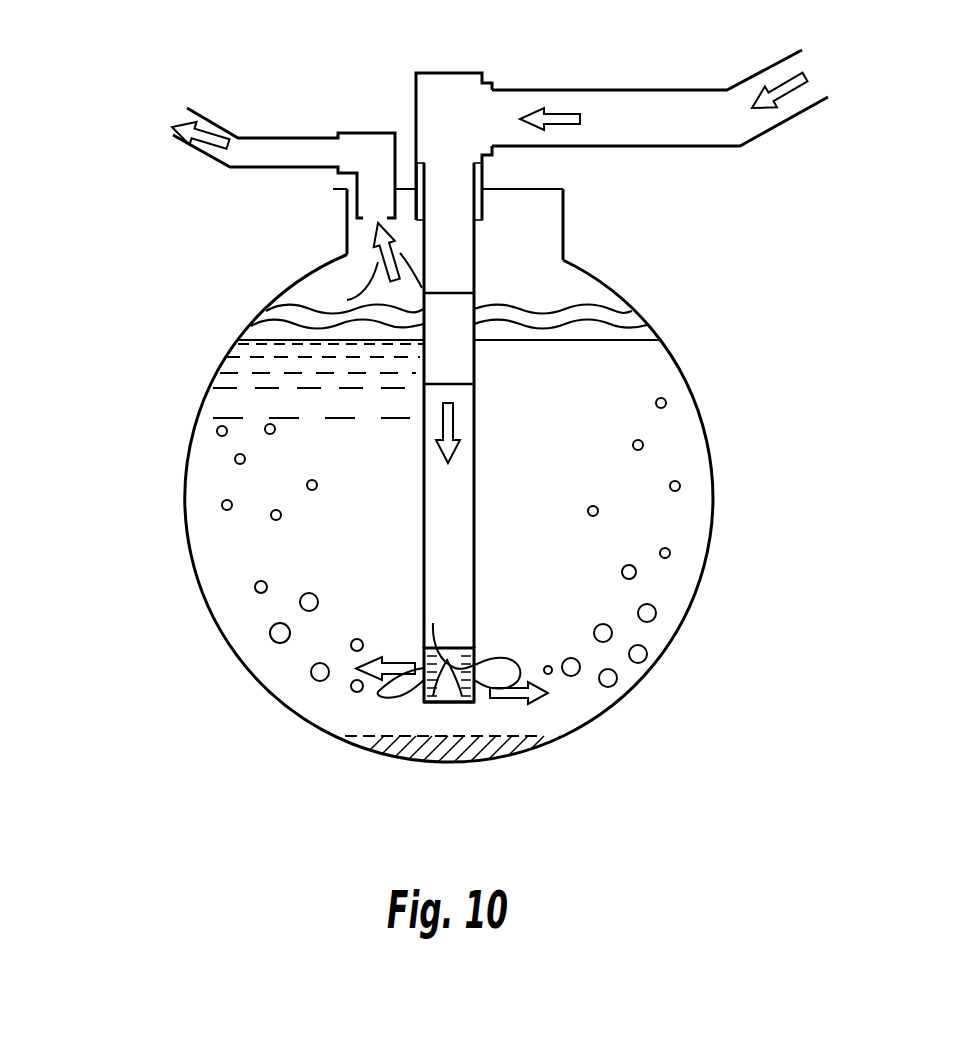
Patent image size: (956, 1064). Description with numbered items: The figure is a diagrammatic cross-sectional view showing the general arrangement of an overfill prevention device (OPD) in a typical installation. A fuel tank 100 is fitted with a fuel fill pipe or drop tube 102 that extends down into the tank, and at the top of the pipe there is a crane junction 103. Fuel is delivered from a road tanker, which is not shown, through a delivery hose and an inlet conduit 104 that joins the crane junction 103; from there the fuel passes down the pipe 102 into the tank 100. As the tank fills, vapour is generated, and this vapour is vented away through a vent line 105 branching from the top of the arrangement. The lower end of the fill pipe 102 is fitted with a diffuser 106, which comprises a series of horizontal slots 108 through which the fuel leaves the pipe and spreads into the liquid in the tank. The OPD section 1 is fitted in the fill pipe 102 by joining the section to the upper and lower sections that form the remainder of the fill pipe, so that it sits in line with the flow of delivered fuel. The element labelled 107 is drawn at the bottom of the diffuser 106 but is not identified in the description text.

The OPD section 1 is at (476, 300).
The fuel tank 100 is at (185, 505).
The fuel fill pipe or drop tube 102 is at (477, 248).
The crane junction 103 is at (457, 73).
The inlet conduit 104 is at (785, 120).
The vent line 105 is at (273, 137).
The diffuser 106 is at (423, 663).
The nozzle bottom 107 is at (446, 702).
The horizontal slots 108 is at (476, 668).